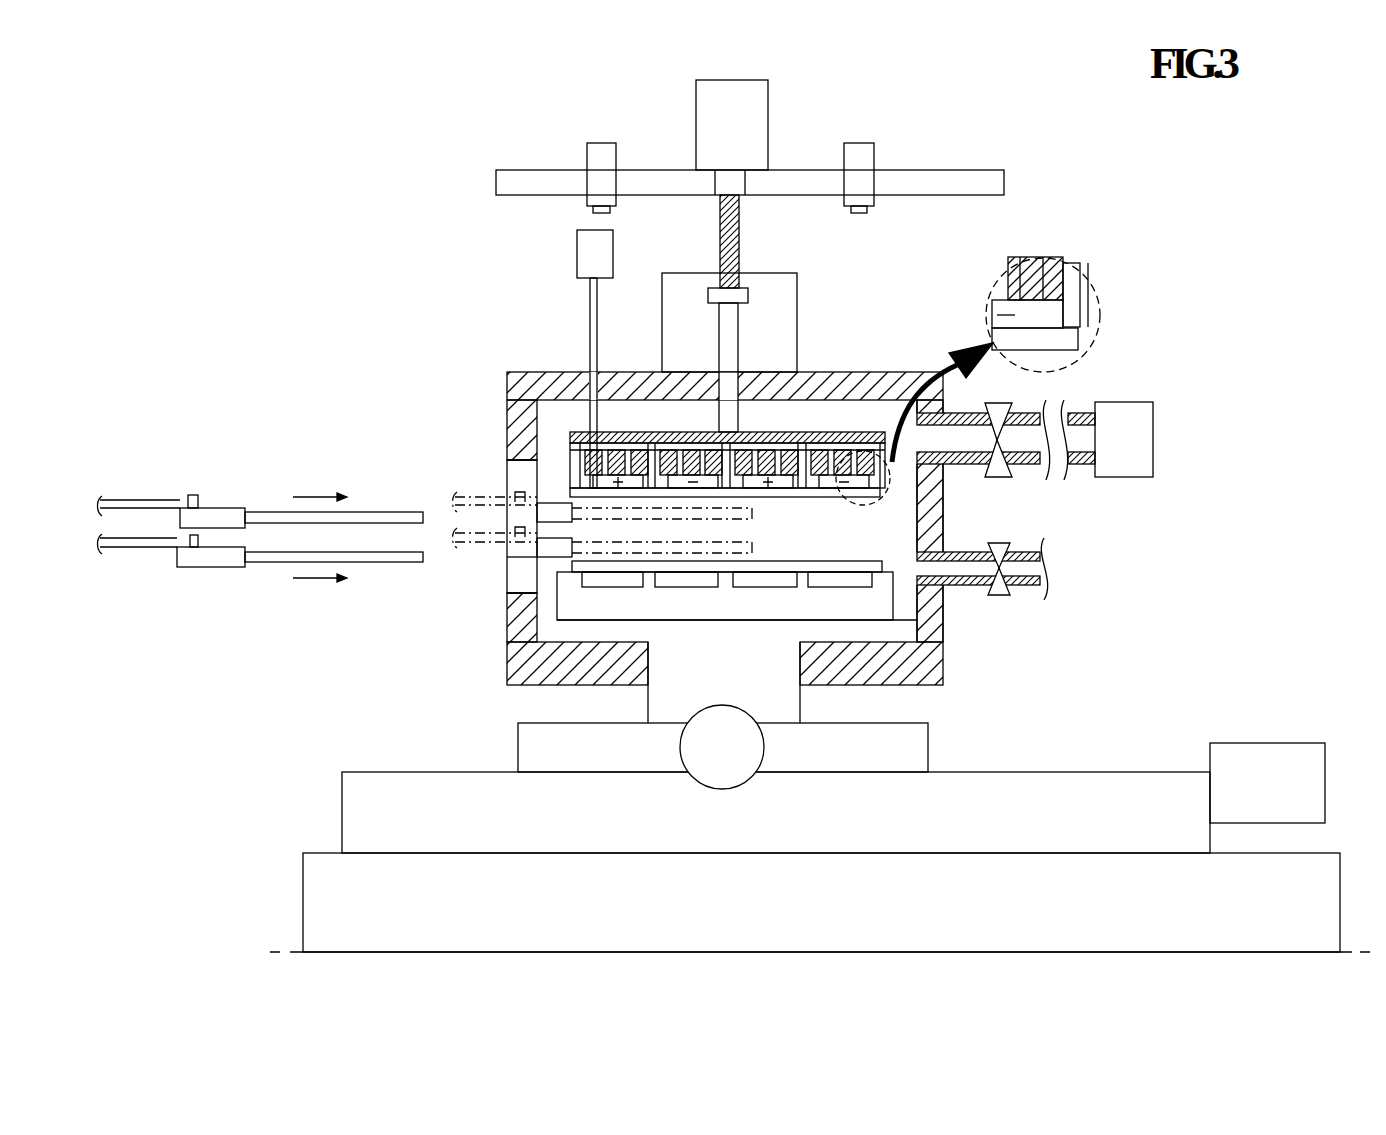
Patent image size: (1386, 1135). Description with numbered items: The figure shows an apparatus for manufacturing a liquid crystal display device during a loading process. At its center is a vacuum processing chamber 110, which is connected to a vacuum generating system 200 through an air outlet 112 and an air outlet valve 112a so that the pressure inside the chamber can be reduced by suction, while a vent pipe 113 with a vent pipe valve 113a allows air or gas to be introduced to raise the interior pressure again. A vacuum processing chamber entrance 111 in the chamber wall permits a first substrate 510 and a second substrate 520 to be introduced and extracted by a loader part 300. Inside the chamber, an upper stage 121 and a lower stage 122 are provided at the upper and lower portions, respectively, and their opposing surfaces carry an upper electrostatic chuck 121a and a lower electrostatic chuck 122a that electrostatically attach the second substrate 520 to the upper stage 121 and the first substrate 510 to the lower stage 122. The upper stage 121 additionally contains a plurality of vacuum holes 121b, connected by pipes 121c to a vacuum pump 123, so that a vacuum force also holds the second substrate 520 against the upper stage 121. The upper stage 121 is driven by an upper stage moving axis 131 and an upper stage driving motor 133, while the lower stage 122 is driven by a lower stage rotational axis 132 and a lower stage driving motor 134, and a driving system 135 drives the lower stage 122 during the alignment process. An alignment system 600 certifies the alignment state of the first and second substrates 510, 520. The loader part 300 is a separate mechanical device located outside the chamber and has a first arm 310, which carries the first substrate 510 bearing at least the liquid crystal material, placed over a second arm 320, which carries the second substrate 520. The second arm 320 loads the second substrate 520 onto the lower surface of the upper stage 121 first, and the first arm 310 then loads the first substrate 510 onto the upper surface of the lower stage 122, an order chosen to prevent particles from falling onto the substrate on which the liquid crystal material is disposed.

The vacuum processing chamber 110 is at (504, 364).
The vacuum processing chamber entrance 111 is at (520, 587).
The air outlet 112 is at (1078, 465).
The air outlet valve 112a is at (996, 478).
The vent pipe 113 is at (1030, 570).
The vent pipe valve 113a is at (1000, 597).
The upper stage 121 is at (873, 380).
The upper electrostatic chuck 121a is at (1050, 318).
The vacuum holes 121b is at (1087, 270).
The pipes 121c is at (868, 432).
The lower stage 122 is at (827, 607).
The lower electrostatic chuck 122a is at (850, 577).
The vacuum pump 123 is at (577, 246).
The upper stage moving axis 131 is at (732, 327).
The lower stage rotational axis 132 is at (663, 698).
The upper stage driving motor 133 is at (758, 112).
The lower stage driving motor 134 is at (727, 770).
The driving system 135 is at (1285, 755).
The vacuum generating system 200 is at (1153, 440).
The loader part 300 is at (425, 512).
The first arm 310 is at (237, 512).
The second arm 320 is at (557, 503).
The first substrate 510 is at (600, 570).
The second substrate 520 is at (575, 470).
The alignment system 600 is at (600, 152).